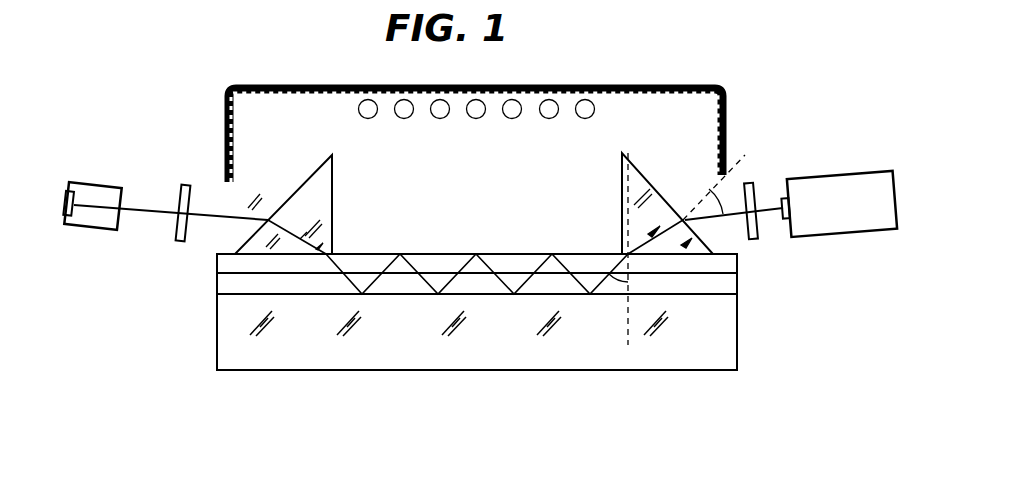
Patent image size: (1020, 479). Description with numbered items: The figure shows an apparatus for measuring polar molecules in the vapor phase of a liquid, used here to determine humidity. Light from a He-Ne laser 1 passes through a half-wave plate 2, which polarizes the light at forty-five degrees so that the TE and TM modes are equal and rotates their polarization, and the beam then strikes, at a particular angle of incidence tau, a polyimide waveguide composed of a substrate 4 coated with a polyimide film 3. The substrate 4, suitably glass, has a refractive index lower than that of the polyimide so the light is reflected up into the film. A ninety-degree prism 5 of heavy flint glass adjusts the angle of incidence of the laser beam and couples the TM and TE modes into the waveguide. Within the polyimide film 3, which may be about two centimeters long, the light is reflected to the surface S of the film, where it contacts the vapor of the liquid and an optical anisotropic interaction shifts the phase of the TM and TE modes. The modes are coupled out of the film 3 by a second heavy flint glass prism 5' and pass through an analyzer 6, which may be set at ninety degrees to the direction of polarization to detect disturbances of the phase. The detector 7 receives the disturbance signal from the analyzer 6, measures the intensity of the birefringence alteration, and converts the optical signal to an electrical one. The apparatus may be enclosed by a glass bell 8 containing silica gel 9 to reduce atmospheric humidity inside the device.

The He-Ne laser 1 is at (840, 177).
The half-wave plate 2 is at (757, 240).
The polyimide film 3 is at (224, 284).
The substrate 4 is at (224, 330).
The prism 5 is at (671, 249).
The heavy flint glass prism 5' is at (299, 204).
The analyzer 6 is at (180, 195).
The detector 7 is at (66, 196).
The glass bell 8 is at (648, 87).
The silica gel 9 is at (473, 121).
The surface of the film S is at (553, 254).